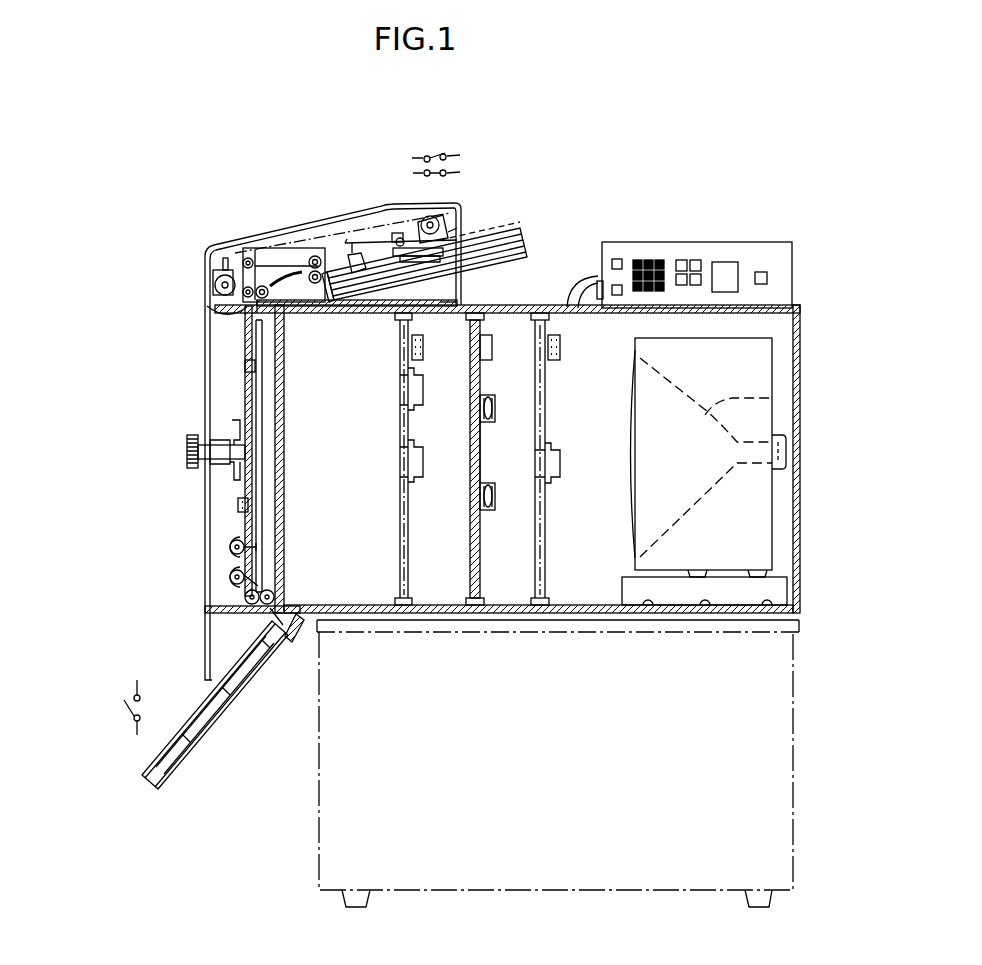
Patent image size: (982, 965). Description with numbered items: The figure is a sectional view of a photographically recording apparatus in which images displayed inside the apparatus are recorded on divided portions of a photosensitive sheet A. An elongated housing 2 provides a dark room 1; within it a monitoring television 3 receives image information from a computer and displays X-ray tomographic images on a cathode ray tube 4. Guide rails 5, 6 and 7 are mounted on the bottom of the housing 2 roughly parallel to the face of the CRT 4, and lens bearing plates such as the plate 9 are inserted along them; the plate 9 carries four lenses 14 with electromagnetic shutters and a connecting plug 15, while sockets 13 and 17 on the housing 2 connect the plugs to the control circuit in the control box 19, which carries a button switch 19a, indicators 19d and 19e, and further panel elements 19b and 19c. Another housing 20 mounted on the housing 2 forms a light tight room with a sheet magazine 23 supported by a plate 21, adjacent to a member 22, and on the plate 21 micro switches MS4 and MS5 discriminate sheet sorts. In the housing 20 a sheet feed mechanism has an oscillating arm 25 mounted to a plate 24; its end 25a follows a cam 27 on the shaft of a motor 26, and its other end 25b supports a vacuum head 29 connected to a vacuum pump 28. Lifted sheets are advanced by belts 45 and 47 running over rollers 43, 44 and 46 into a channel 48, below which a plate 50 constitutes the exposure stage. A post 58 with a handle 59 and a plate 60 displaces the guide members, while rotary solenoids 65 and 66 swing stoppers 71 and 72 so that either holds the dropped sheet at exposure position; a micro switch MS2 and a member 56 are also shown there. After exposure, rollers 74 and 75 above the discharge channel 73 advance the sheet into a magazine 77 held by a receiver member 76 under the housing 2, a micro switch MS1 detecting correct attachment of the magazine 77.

The dark room 1 is at (597, 588).
The housing 2 is at (801, 316).
The monitoring television 3 is at (762, 505).
The cathode ray tube 4 is at (786, 398).
The guide rail 5 is at (550, 607).
The guide rail 6 is at (471, 607).
The guide rail 7 is at (402, 608).
The lens bearing plate 9 is at (478, 575).
The socket 13 is at (558, 353).
The lenses 14 is at (487, 490).
The connecting plug 15 is at (488, 350).
The socket 17 is at (411, 348).
The control box 19 is at (687, 250).
The button switch 19a is at (617, 297).
The indicator 19b is at (768, 279).
The display 19c is at (723, 268).
The indicator 19d is at (692, 290).
The indicator 19e is at (645, 292).
The housing 20 is at (243, 250).
The plate 21 is at (462, 291).
The tray 22 is at (498, 228).
The sheet magazine 23 is at (510, 260).
The plate 24 is at (398, 233).
The oscillating arm 25 is at (362, 243).
The end of arm 25a is at (452, 240).
The other end of arm 25b is at (350, 240).
The motor 26 is at (440, 215).
The cam 27 is at (418, 220).
The vacuum pump 28 is at (238, 250).
The vacuum head 29 is at (348, 262).
The rollers 43 is at (230, 258).
The roller 44 is at (250, 261).
The belts 45 is at (277, 266).
The rollers 46 is at (218, 280).
The belts 47 is at (222, 272).
The channel 48 is at (226, 300).
The plate 50 is at (247, 335).
The stop 56 is at (243, 367).
The post 58 is at (212, 463).
The handle 59 is at (188, 453).
The plate 60 is at (235, 433).
The rotary solenoid 65 is at (230, 547).
The rotary solenoid 66 is at (230, 578).
The stopper 71 is at (250, 543).
The stopper 72 is at (250, 580).
The discharge channel 73 is at (262, 609).
The roller 74 is at (245, 597).
The roller 75 is at (282, 650).
The receiver member 76 is at (253, 690).
The magazine 77 is at (183, 765).
The photosensitive sheet A is at (523, 235).
The micro switch MS1 is at (110, 707).
The microswitch MS2 is at (238, 507).
The micro switch MS4 is at (436, 149).
The micro switch MS5 is at (442, 186).